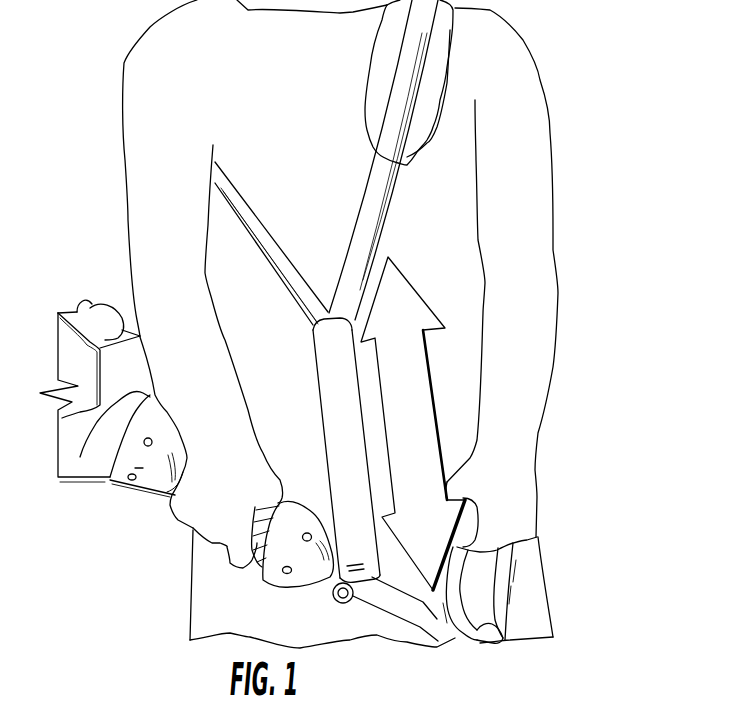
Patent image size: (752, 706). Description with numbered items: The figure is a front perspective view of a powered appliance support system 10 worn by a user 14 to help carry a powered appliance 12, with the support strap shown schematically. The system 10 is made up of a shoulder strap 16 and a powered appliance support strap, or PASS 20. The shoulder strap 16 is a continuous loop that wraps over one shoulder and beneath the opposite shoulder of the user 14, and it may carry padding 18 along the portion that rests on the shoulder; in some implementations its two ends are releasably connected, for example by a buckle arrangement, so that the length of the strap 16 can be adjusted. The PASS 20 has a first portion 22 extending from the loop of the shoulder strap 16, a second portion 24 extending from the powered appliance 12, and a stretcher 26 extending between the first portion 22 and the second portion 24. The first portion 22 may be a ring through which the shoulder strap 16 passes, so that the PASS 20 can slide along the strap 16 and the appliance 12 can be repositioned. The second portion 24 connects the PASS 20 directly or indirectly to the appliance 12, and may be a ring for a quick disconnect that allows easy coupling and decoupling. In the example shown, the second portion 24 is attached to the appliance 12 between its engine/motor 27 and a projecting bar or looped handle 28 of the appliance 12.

The powered appliance support system 10 is at (420, 165).
The powered appliance 12 is at (105, 372).
The user 14 is at (124, 63).
The shoulder strap 16 is at (388, 213).
The padding 18 is at (449, 65).
The powered appliance support strap (PASS) 20 is at (302, 389).
The first portion 22 is at (313, 328).
The second portion 24 is at (359, 572).
The stretcher 26 is at (328, 412).
The engine/motor 27 is at (80, 482).
The projecting bar or looped handle 28 is at (517, 578).